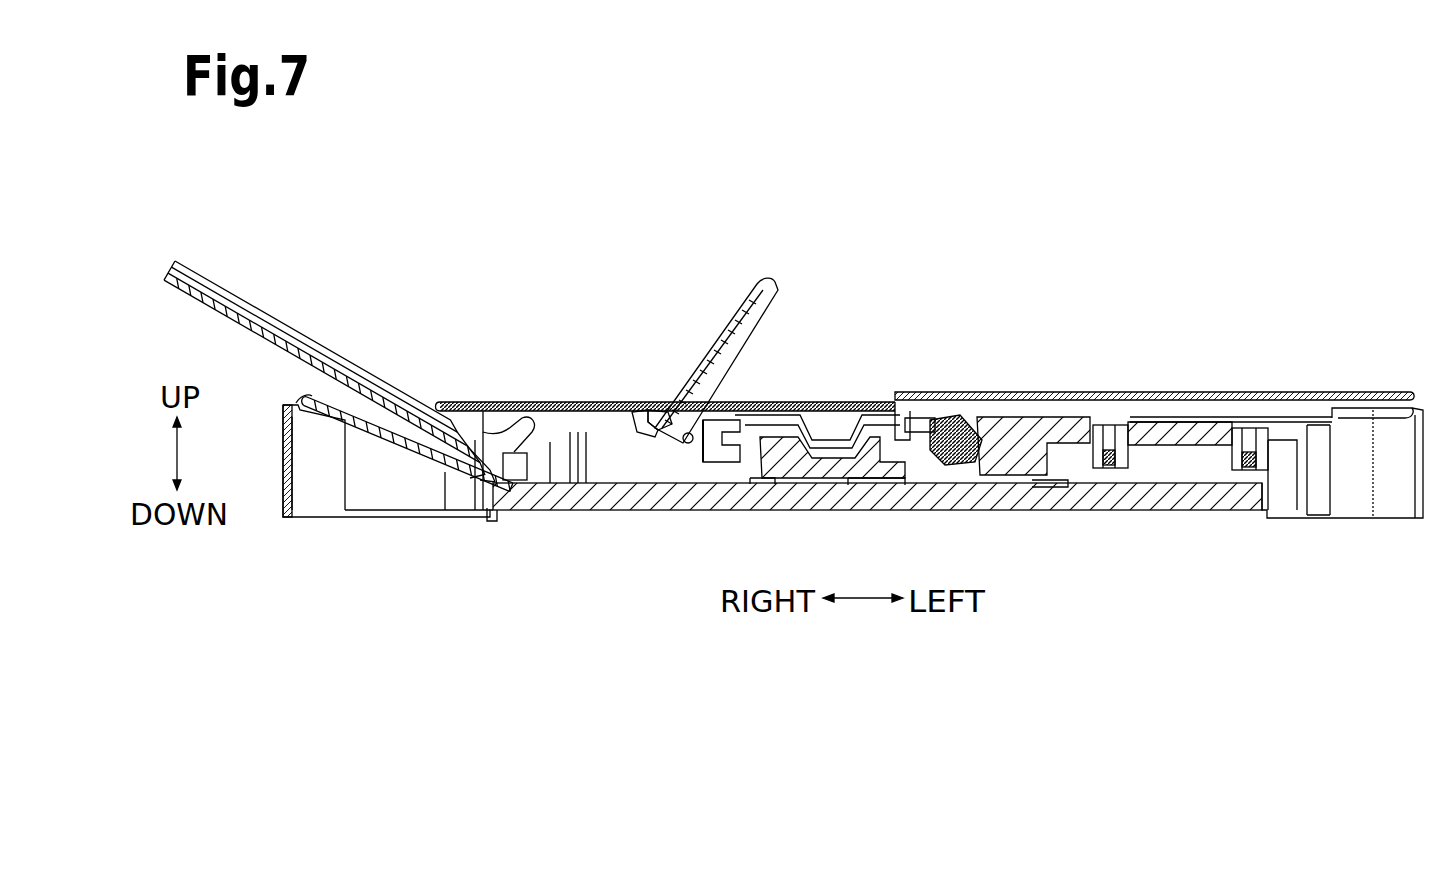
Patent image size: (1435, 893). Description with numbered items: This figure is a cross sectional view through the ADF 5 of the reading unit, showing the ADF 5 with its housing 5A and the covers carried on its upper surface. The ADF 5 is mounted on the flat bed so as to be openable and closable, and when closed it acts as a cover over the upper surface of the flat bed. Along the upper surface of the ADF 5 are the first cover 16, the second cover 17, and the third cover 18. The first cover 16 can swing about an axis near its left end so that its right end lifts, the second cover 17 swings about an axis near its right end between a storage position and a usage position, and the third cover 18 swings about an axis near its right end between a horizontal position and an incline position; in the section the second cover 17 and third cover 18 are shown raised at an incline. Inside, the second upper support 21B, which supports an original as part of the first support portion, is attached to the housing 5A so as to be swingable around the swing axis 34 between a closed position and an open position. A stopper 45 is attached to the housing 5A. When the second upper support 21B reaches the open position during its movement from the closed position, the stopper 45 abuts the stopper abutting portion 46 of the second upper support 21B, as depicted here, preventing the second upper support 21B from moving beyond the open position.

The ADF 5 is at (1330, 366).
The housing 5A is at (745, 503).
The first cover 16 is at (1075, 393).
The second cover 17 is at (180, 257).
The third cover 18 is at (312, 392).
The second upper support 21B is at (776, 283).
The swing axis 34 is at (687, 446).
The stopper 45 is at (660, 410).
The stopper abutting portion 46 is at (648, 423).